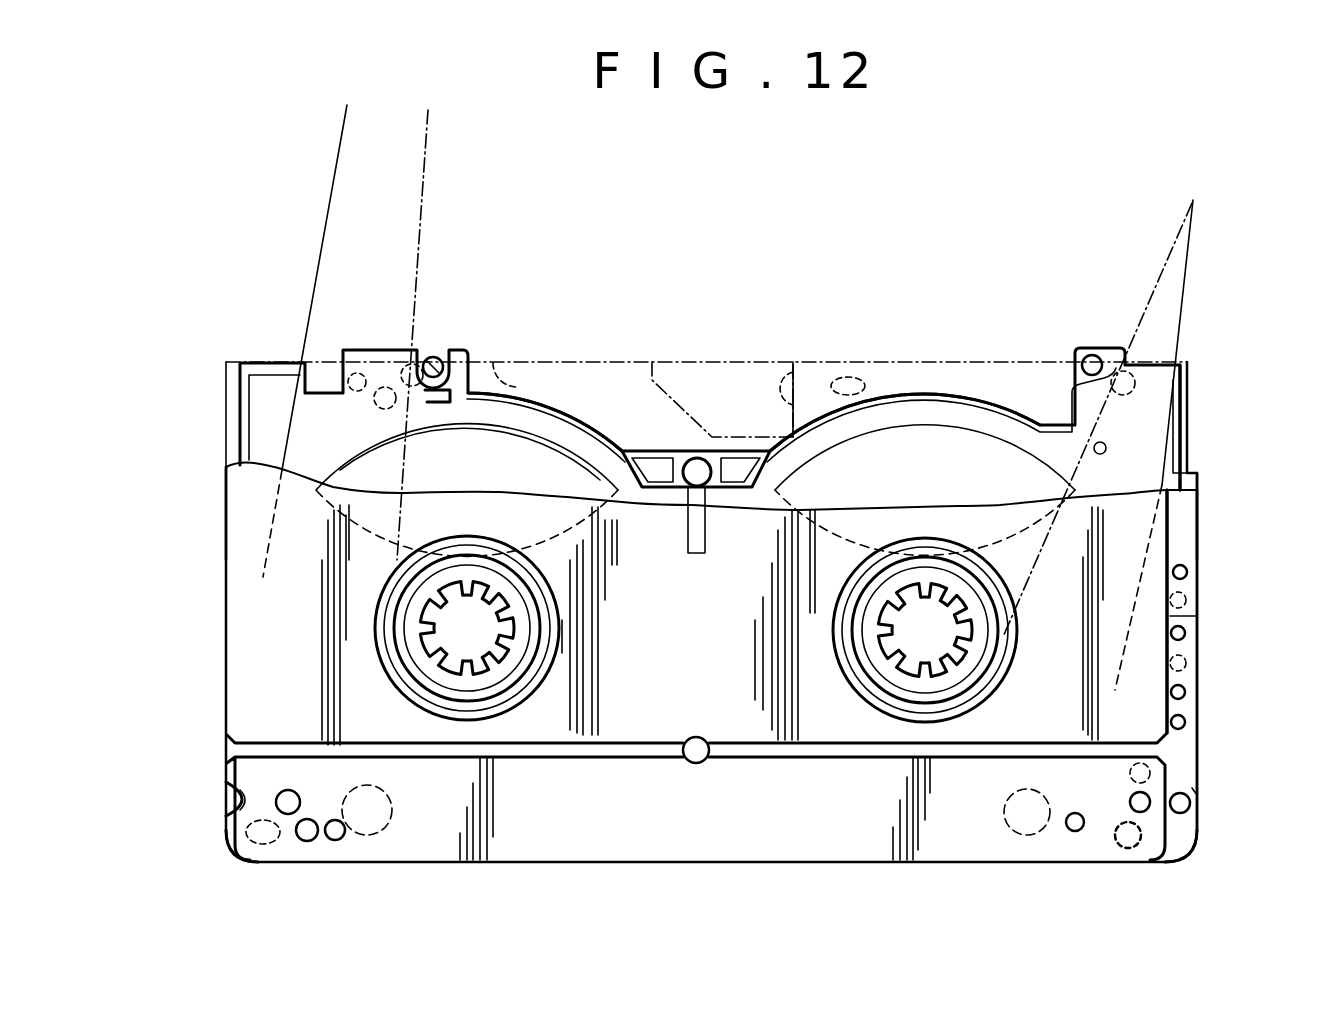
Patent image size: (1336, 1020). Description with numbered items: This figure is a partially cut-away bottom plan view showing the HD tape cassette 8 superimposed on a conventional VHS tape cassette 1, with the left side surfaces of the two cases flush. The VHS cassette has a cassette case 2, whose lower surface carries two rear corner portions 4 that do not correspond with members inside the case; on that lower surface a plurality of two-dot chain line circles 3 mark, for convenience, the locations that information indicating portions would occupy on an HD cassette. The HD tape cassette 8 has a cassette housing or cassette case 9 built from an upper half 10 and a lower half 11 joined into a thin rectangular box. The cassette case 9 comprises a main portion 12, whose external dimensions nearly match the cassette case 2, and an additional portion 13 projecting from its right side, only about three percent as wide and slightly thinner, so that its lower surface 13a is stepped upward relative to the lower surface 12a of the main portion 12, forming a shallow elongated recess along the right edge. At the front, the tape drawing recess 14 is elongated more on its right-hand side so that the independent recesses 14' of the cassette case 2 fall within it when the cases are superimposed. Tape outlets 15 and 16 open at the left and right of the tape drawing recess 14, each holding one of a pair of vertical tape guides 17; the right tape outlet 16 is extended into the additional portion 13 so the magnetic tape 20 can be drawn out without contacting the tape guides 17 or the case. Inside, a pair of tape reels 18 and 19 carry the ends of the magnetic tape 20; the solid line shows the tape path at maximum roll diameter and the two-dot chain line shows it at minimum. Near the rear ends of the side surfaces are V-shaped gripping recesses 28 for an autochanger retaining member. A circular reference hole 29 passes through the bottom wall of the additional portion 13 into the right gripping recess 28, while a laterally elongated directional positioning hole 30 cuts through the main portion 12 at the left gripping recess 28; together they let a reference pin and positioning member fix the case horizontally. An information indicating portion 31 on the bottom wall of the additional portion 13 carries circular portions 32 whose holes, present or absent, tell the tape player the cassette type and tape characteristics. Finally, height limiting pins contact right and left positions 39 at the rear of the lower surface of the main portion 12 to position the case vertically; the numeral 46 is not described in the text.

The VHS tape cassette 1 is at (727, 360).
The cassette case 2 is at (630, 362).
The two-dot chain line circles 3 is at (311, 840).
The rear corner portions 4 is at (252, 850).
The tape cassette 8 is at (222, 533).
The cassette case 9 is at (227, 575).
The upper half 10 is at (1180, 420).
The lower half 11 is at (243, 601).
The main portion 12 is at (235, 636).
The lower surface of main portion 12a is at (270, 666).
The additional portion 13 is at (1188, 505).
The lower surface of additional portion 13a is at (1188, 520).
The tape drawing recess 14 is at (545, 383).
The independent recesses 14' is at (739, 367).
The tape outlet 15 is at (377, 370).
The tape outlet 16 is at (1116, 352).
The tape guides 17 is at (417, 360).
The tape reel 18 is at (907, 437).
The tape reel 19 is at (510, 443).
The magnetic tape 20 is at (322, 245).
The gripping recesses 28 is at (228, 784).
The reference hole 29 is at (1185, 806).
The directional positioning hole 30 is at (232, 807).
The information indicating portion 31 is at (1188, 618).
The circular portions 32 is at (1188, 602).
The positions 39 is at (380, 830).
The hole 46 is at (1188, 570).